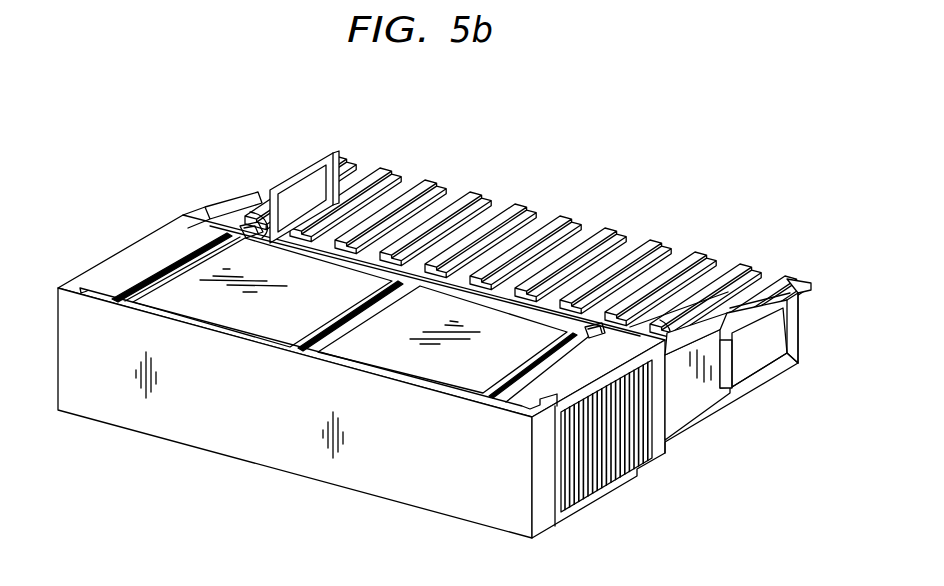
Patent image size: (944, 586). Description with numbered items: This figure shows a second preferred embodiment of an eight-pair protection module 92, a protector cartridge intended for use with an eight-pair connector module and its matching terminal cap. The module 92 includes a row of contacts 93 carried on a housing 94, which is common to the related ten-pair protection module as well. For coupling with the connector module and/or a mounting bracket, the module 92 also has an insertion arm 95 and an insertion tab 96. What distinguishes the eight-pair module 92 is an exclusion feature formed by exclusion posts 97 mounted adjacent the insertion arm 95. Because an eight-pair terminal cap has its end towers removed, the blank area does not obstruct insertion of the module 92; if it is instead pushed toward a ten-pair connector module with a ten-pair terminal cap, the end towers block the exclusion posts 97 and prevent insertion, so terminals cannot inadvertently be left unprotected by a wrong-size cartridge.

The 8-pair protection module 92 is at (398, 535).
The contacts 93 is at (442, 181).
The housing 94 is at (121, 398).
The insertion arm 95 is at (705, 398).
The insertion tab 96 is at (758, 357).
The exclusion posts 97 is at (247, 222).